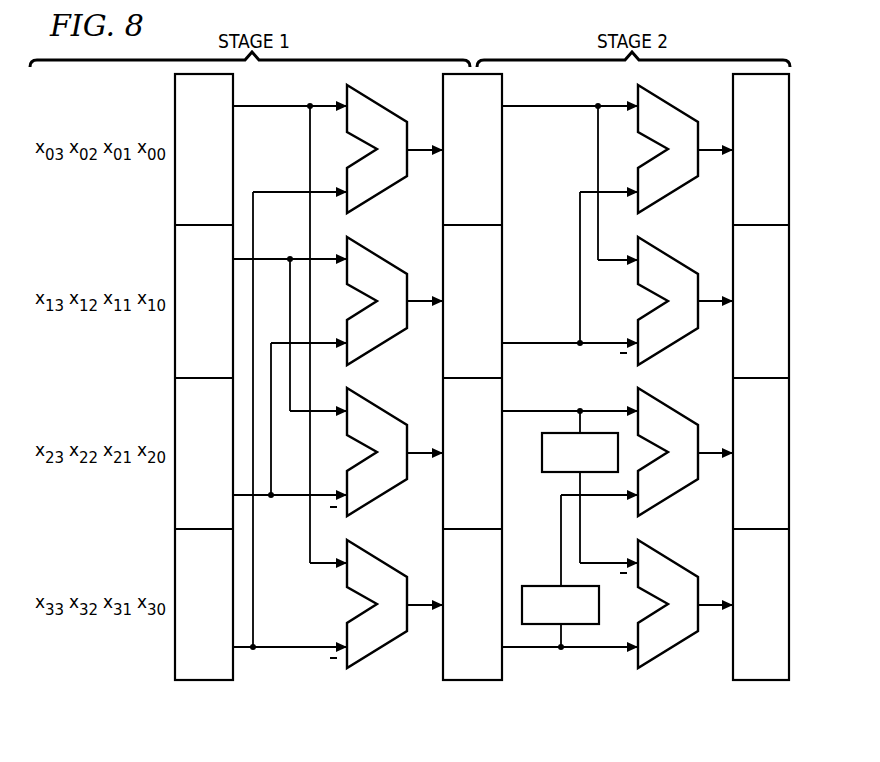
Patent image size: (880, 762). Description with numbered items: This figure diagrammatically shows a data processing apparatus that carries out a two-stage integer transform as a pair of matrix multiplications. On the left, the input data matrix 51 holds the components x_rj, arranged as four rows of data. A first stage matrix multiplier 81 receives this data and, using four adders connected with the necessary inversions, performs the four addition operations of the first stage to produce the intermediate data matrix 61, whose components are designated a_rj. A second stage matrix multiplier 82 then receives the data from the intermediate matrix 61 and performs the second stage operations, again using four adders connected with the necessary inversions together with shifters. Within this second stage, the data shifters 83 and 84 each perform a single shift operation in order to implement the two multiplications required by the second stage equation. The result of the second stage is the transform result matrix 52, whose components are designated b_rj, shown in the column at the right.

The input data matrix 51 is at (98, 683).
The first stage matrix multiplier 81 is at (320, 683).
The intermediate data matrix 61 is at (473, 683).
The second stage matrix multiplier 82 is at (677, 683).
The transform result matrix 52 is at (763, 683).
The data shifter 83 is at (552, 473).
The data shifter 84 is at (541, 585).